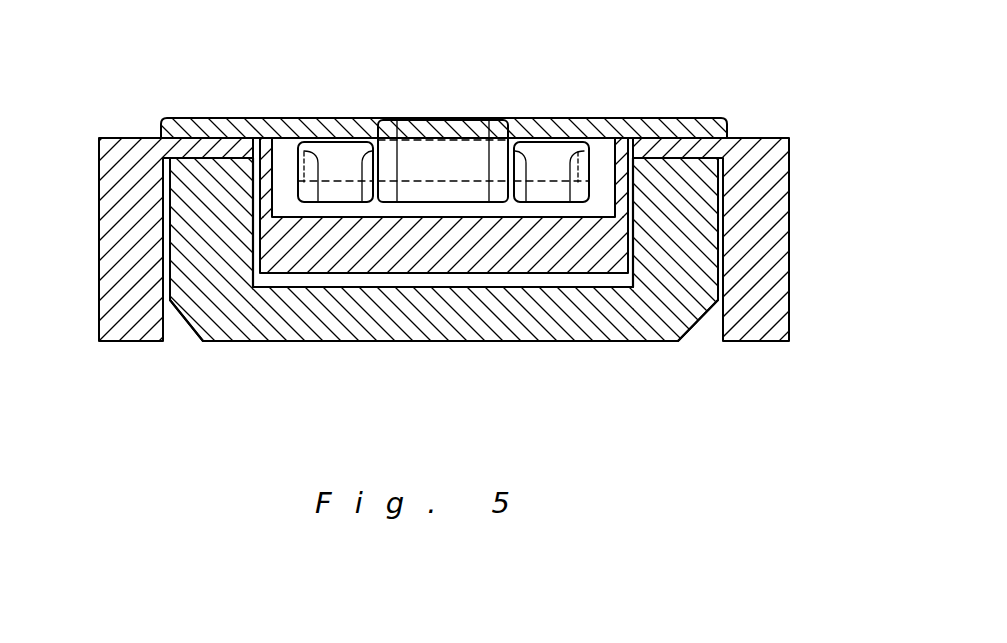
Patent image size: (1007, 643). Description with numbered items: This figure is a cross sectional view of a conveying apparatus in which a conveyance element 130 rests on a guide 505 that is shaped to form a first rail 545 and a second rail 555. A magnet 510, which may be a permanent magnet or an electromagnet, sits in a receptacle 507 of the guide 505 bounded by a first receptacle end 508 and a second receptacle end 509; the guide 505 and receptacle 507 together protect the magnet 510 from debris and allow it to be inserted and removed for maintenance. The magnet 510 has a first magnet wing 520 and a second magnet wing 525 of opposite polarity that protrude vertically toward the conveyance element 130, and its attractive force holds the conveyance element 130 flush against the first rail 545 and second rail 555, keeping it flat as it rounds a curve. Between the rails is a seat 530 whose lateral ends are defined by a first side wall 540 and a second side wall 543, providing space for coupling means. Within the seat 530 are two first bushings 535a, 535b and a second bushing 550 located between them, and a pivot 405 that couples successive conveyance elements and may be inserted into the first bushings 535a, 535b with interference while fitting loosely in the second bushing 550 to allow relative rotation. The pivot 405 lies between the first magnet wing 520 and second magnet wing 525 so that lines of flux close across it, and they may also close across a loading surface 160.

The conveyance element 130 is at (357, 117).
The loading surface 160 is at (532, 122).
The pivot 405 is at (447, 153).
The guide 505 is at (550, 256).
The receptacle 507 is at (403, 282).
The first receptacle end 508 is at (172, 308).
The second receptacle end 509 is at (717, 305).
The magnet 510 is at (423, 316).
The first magnet wing 520 is at (212, 197).
The second magnet wing 525 is at (672, 182).
The seat 530 is at (287, 181).
The first bushing 535a is at (327, 195).
The first bushing 535b is at (578, 197).
The first side wall 540 is at (278, 155).
The second side wall 543 is at (609, 150).
The first rail 545 is at (130, 168).
The second bushing 550 is at (455, 198).
The second rail 555 is at (757, 168).